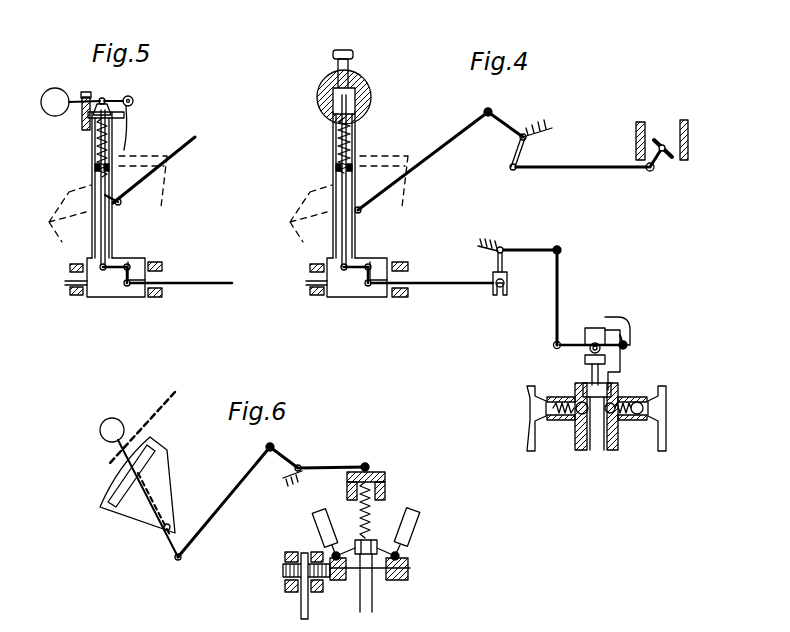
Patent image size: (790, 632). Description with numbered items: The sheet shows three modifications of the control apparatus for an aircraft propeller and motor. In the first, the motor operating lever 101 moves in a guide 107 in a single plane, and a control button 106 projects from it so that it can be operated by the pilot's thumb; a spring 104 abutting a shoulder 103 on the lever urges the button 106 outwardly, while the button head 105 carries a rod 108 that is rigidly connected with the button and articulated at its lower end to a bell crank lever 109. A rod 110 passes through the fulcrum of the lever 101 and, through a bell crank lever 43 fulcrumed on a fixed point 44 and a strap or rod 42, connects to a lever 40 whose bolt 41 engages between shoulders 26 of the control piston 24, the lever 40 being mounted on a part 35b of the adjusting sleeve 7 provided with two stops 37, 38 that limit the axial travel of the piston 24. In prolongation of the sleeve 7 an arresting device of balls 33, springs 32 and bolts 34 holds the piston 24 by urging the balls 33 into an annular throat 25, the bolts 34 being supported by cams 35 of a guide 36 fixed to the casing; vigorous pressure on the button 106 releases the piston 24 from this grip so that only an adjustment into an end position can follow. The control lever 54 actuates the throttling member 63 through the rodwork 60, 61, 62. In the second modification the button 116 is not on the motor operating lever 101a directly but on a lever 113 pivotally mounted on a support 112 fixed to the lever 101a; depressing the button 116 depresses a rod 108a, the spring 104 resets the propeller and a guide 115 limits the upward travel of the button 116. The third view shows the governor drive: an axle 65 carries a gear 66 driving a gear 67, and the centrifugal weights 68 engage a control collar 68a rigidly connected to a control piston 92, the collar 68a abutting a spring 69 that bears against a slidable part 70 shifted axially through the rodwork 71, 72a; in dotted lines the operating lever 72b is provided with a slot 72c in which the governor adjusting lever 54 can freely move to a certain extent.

In FIG. 4, the adjusting sleeve 7 is at (578, 447).
In FIG. 4, the control piston 24 is at (600, 448).
In FIG. 4, the annular throat 25 is at (581, 424).
In FIG. 4, the shoulders 26 is at (592, 328).
In FIG. 4, the springs 32 is at (630, 397).
In FIG. 4, the balls 33 is at (578, 396).
In FIG. 4, the bolts 34 is at (628, 424).
In FIG. 4, the cams 35 is at (540, 408).
In FIG. 4, the pivot pin 35b is at (628, 345).
In FIG. 4, the guide 36 is at (532, 437).
In FIG. 4, the stop 37 is at (613, 317).
In FIG. 4, the stop 38 is at (616, 377).
In FIG. 4, the lever 40 is at (555, 349).
In FIG. 4, the bolt 41 is at (626, 338).
In FIG. 4, the strap 42 is at (561, 272).
In FIG. 4, the bell crank lever 43 is at (504, 262).
In FIG. 4, the fixed point 44 is at (505, 244).
In FIG. 6, the control lever 54 is at (101, 425).
In FIG. 5, the rodwork 60 is at (177, 148).
In FIG. 4, the rodwork 60 is at (446, 145).
In FIG. 4, the rodwork 61 is at (518, 148).
In FIG. 4, the rodwork 62 is at (576, 170).
In FIG. 4, the throttling member 63 is at (657, 142).
In FIG. 6, the axle 65 is at (300, 611).
In FIG. 6, the gear 66 is at (285, 578).
In FIG. 6, the gear 67 is at (410, 570).
In FIG. 6, the centrifugal weights 68 is at (320, 531).
In FIG. 6, the control collar 68a is at (358, 541).
In FIG. 6, the spring 69 is at (373, 530).
In FIG. 6, the part 70 is at (370, 466).
In FIG. 6, the rodwork 71 is at (307, 467).
In FIG. 6, the rod 72a is at (228, 498).
In FIG. 6, the operating lever 72b is at (173, 393).
In FIG. 6, the slot 72c is at (125, 445).
In FIG. 6, the control piston 92 is at (374, 597).
In FIG. 4, the motor operating lever 101 is at (334, 132).
In FIG. 5, the motor operating lever 101a is at (114, 147).
In FIG. 5, the shoulder 103 is at (94, 168).
In FIG. 4, the shoulder 103 is at (335, 168).
In FIG. 5, the spring 104 is at (95, 140).
In FIG. 4, the spring 104 is at (357, 130).
In FIG. 4, the knob 105 is at (366, 95).
In FIG. 4, the button 106 is at (354, 56).
In FIG. 5, the guide 107 is at (72, 192).
In FIG. 4, the guide 107 is at (320, 195).
In FIG. 4, the rod 108 is at (347, 226).
In FIG. 5, the rod 108a is at (106, 224).
In FIG. 5, the bell crank lever 109 is at (110, 270).
In FIG. 4, the bell crank lever 109 is at (352, 270).
In FIG. 5, the rod 110 is at (180, 282).
In FIG. 4, the rod 110 is at (432, 285).
In FIG. 5, the support 112 is at (133, 101).
In FIG. 5, the lever 113 is at (108, 99).
In FIG. 5, the guide 115 is at (85, 93).
In FIG. 5, the button 116 is at (55, 88).